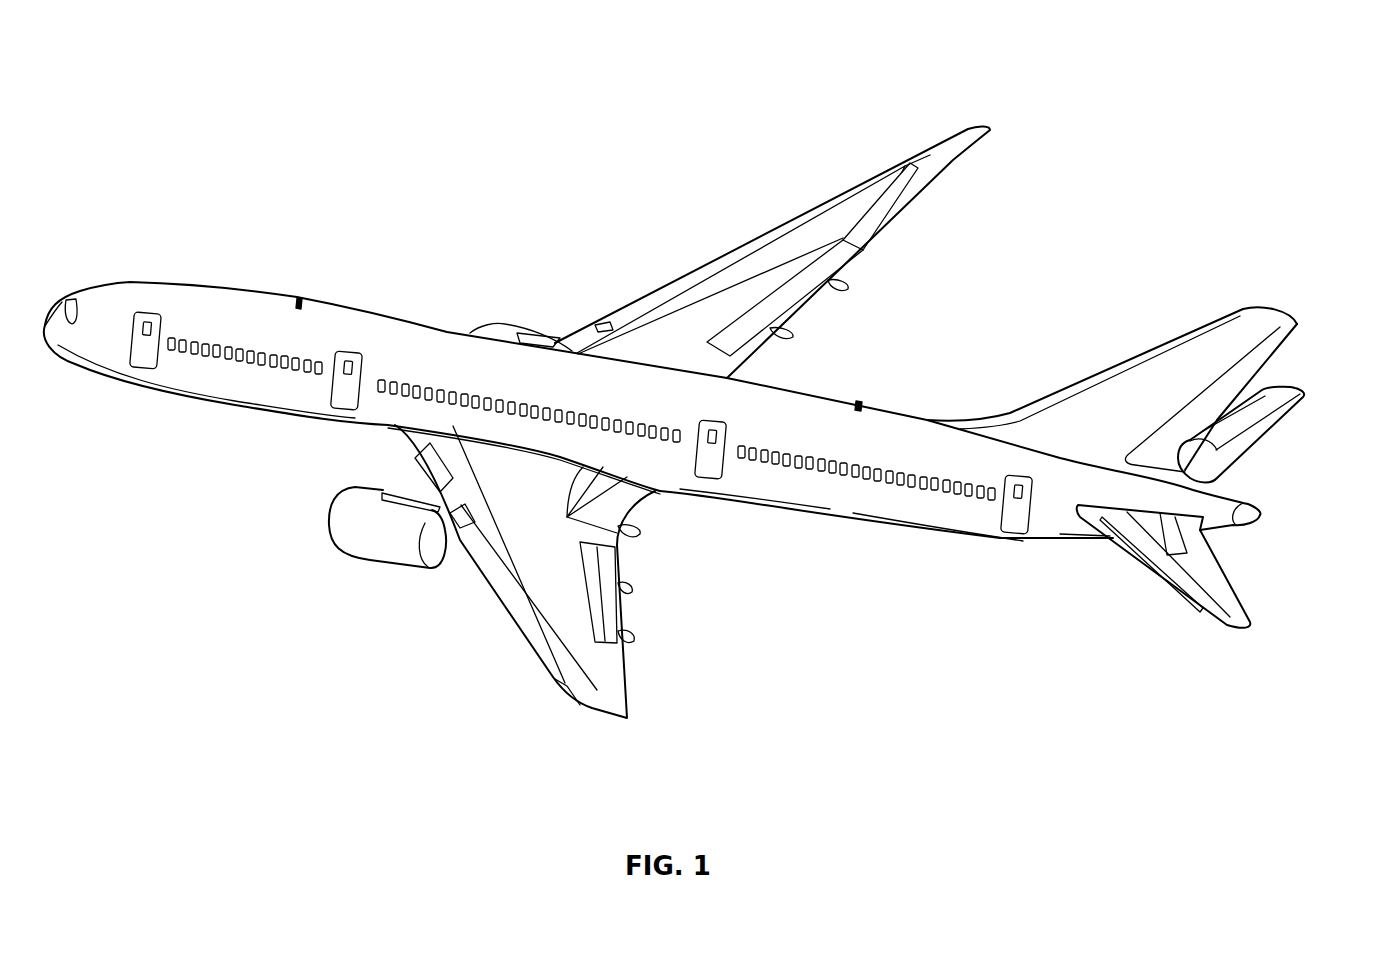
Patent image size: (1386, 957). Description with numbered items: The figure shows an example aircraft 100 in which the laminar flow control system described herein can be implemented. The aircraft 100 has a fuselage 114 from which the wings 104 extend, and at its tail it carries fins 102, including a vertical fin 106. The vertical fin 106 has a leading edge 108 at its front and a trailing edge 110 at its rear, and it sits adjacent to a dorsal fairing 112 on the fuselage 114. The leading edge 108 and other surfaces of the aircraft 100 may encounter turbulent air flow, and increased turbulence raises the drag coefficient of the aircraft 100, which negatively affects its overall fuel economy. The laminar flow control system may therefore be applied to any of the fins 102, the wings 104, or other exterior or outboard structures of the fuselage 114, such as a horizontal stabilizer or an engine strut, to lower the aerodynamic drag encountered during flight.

The aircraft 100 is at (276, 103).
The fins 102 is at (1226, 298).
The wings 104 is at (687, 283).
The vertical fin 106 is at (1183, 358).
The leading edge 108 is at (1085, 385).
The trailing edge 110 is at (1284, 354).
The dorsal fairing 112 is at (977, 428).
The fuselage 114 is at (433, 342).